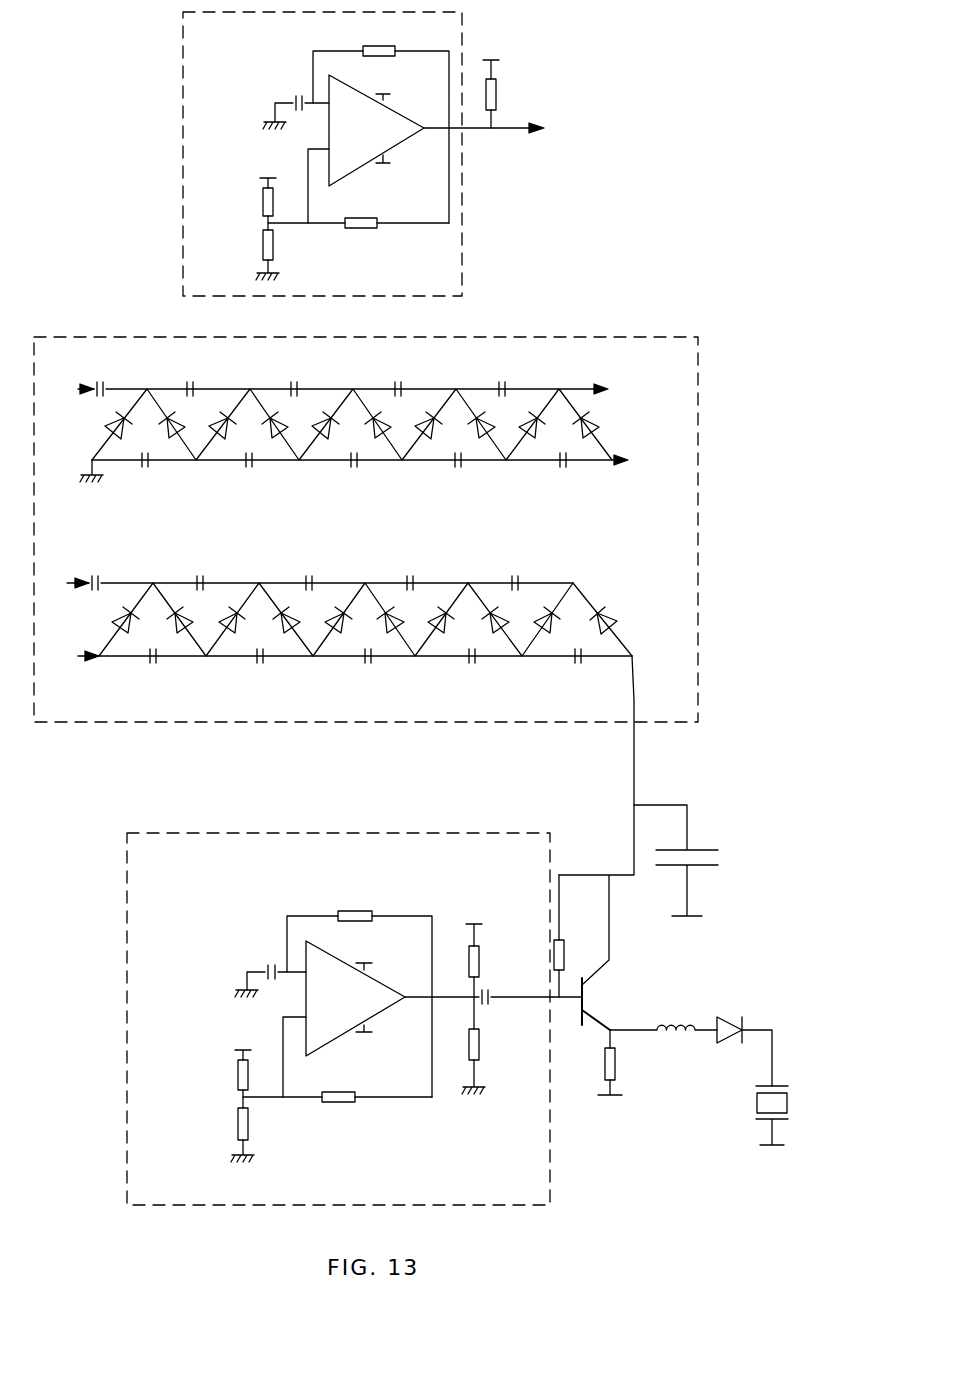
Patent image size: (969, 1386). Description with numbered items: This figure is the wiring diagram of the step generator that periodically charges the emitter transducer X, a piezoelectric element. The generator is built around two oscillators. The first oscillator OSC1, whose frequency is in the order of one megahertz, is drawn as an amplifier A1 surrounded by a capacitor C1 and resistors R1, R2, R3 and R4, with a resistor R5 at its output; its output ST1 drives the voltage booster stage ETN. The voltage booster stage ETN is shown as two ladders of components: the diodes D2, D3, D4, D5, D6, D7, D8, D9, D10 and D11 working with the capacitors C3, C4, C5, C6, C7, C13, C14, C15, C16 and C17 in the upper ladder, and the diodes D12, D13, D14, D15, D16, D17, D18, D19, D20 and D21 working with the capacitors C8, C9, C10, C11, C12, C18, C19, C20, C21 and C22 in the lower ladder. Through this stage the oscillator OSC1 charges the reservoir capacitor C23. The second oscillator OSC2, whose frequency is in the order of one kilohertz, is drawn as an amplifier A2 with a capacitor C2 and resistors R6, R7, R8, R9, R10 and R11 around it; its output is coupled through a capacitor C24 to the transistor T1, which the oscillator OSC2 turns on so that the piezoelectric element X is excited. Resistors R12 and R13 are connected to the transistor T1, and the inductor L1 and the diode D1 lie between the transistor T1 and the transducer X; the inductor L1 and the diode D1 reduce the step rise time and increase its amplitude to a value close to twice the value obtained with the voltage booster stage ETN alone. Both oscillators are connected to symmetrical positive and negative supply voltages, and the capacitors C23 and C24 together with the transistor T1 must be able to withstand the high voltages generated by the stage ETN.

The oscillator OSC1 is at (184, 140).
The operational amplifier A1 is at (382, 128).
The resistor R1 is at (254, 204).
The resistor R2 is at (255, 255).
The resistor R3 is at (358, 240).
The resistor R4 is at (381, 121).
The resistor R5 is at (497, 78).
The capacitor C1 is at (296, 98).
The output ST1 is at (507, 128).
The voltage booster stage ETN is at (177, 722).
The capacitor C3 is at (99, 374).
The capacitor C4 is at (194, 374).
The capacitor C5 is at (299, 374).
The capacitor C6 is at (401, 374).
The capacitor C7 is at (504, 374).
The capacitor C8 is at (97, 569).
The capacitor C9 is at (204, 569).
The capacitor C10 is at (314, 569).
The capacitor C11 is at (413, 569).
The capacitor C12 is at (511, 569).
The capacitor C13 is at (151, 475).
The capacitor C14 is at (259, 475).
The capacitor C15 is at (366, 475).
The capacitor C16 is at (469, 475).
The capacitor C17 is at (571, 475).
The capacitor C18 is at (161, 670).
The capacitor C19 is at (268, 670).
The capacitor C20 is at (373, 670).
The capacitor C21 is at (469, 670).
The capacitor C22 is at (583, 670).
The diode D2 is at (99, 427).
The diode D3 is at (161, 429).
The diode D4 is at (213, 419).
The diode D5 is at (264, 429).
The diode D6 is at (316, 419).
The diode D7 is at (369, 429).
The diode D8 is at (422, 419).
The diode D9 is at (469, 429).
The diode D10 is at (521, 419).
The diode D11 is at (580, 429).
The diode D12 is at (102, 624).
The diode D13 is at (165, 624).
The diode D14 is at (220, 612).
The diode D15 is at (272, 624).
The diode D16 is at (326, 612).
The diode D17 is at (376, 624).
The diode D18 is at (429, 612).
The diode D19 is at (483, 624).
The diode D20 is at (531, 612).
The diode D21 is at (588, 624).
The reservoir capacitor C23 is at (684, 879).
The resistor R12 is at (582, 936).
The transistor T1 is at (560, 1004).
The resistor R13 is at (630, 1078).
The inductor L1 is at (663, 1012).
The diode D1 is at (744, 1034).
The emitter transducer X is at (780, 1132).
The oscillator OSC2 is at (127, 928).
The operational amplifier A2 is at (358, 997).
The resistor R6 is at (235, 1064).
The resistor R7 is at (228, 1135).
The resistor R8 is at (337, 1114).
The resistor R9 is at (359, 991).
The resistor R10 is at (487, 963).
The resistor R11 is at (495, 1061).
The capacitor C2 is at (270, 966).
The capacitor C24 is at (469, 1008).